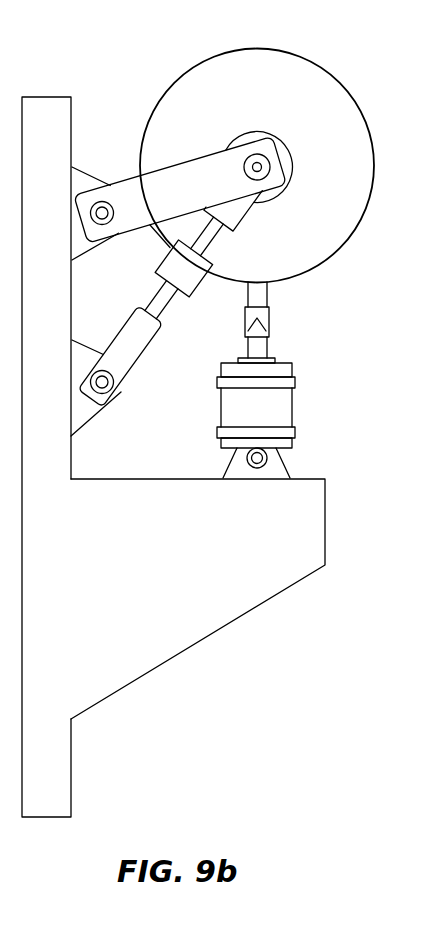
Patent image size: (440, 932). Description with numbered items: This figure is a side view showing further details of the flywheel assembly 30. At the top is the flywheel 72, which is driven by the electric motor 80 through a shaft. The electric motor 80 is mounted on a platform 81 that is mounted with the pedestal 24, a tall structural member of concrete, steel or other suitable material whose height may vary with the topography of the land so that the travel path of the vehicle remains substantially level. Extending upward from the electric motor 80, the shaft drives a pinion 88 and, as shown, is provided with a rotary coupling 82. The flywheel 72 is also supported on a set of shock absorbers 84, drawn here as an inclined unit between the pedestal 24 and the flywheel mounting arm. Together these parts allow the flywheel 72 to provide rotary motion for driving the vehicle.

The flywheel assembly 30 is at (127, 57).
The flywheel 72 is at (255, 49).
The shock absorbers 84 is at (160, 252).
The pinion 88 is at (267, 292).
The rotary coupling 82 is at (270, 318).
The electric motor 80 is at (285, 407).
The platform 81 is at (320, 537).
The pedestal 24 is at (65, 768).